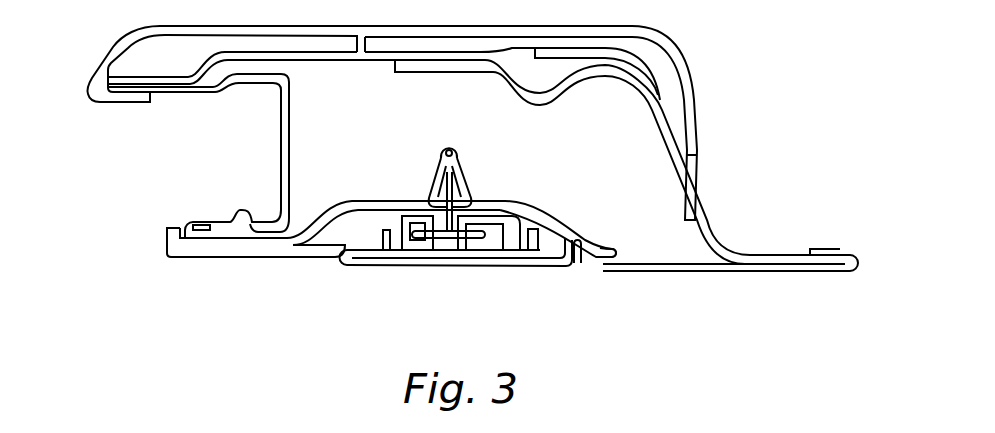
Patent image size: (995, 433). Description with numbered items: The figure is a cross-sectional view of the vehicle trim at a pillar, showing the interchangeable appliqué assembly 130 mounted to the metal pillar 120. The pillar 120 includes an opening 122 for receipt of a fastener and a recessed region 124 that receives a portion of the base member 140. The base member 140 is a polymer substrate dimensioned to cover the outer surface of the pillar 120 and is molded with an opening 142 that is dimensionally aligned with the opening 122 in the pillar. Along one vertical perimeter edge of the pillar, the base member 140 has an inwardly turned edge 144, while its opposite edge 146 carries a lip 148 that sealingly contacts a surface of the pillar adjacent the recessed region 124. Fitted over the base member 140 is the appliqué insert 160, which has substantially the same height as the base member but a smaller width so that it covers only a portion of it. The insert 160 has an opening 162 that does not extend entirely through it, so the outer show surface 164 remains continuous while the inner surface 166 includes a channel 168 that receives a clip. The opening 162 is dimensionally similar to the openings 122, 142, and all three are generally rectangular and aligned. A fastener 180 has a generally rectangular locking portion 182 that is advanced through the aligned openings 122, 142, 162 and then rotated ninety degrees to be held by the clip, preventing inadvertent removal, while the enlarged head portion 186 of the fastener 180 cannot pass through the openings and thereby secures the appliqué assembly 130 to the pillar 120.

The pillar 120 is at (696, 270).
The opening 122 is at (468, 186).
The recessed region 124 is at (550, 214).
The appliqué assembly 130 is at (302, 283).
The base member 140 is at (187, 250).
The opening 142 is at (438, 175).
The inwardly turned edge 144 is at (165, 238).
The opposite edge 146 is at (580, 241).
The lip 148 is at (596, 259).
The appliqué insert 160 is at (393, 257).
The opening 162 is at (453, 226).
The show surface 164 is at (450, 238).
The inner surface 166 is at (533, 202).
The channel 168 is at (420, 228).
The fastener 180 is at (450, 145).
The locking portion 182 is at (433, 237).
The head portion 186 is at (485, 207).